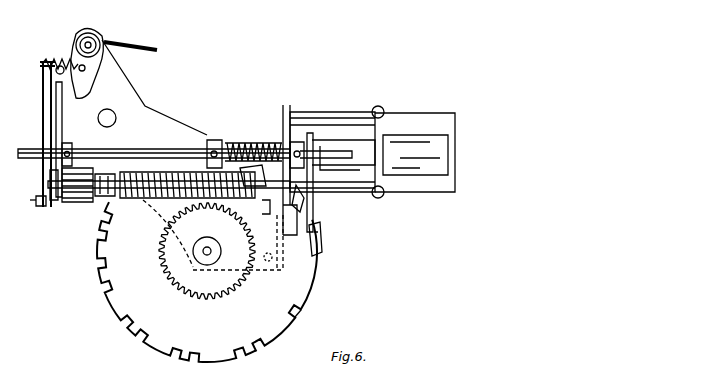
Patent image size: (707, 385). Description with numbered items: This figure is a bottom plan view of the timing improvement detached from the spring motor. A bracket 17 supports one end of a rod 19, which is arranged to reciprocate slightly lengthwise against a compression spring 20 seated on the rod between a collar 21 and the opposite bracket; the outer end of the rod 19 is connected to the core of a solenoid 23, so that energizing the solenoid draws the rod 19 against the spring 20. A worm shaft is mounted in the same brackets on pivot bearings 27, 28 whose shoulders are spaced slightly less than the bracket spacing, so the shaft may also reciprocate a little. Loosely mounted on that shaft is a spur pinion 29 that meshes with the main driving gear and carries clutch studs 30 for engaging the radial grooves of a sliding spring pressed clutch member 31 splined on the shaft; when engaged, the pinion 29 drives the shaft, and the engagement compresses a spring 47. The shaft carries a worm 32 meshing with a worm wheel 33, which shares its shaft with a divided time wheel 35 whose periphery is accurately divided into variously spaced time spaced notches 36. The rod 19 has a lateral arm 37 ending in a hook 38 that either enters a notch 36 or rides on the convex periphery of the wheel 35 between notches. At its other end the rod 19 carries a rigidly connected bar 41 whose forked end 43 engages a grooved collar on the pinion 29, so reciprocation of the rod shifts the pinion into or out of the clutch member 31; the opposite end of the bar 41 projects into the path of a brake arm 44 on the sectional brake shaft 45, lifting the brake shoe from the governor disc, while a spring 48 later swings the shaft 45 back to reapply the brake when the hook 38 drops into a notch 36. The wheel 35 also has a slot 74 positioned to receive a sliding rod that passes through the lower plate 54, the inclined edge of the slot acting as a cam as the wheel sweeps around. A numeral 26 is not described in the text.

The bracket 17 is at (43, 106).
The rod 19 is at (138, 150).
The compression spring 20 is at (256, 140).
The collar 21 is at (214, 138).
The solenoid 23 is at (18, 209).
The stop 26 is at (272, 212).
The pivot bearing 27 is at (40, 206).
The pivot bearing 28 is at (284, 216).
The spur pinion 29 is at (76, 206).
The clutch studs 30 is at (100, 204).
The sliding spring pressed clutch member 31 is at (128, 204).
The worm 32 is at (200, 202).
The worm wheel 33 is at (213, 249).
The time wheel 35 is at (207, 282).
The time spaced notches 36 is at (304, 316).
The lateral arm 37 is at (314, 206).
The hook 38 is at (322, 250).
The bar 41 is at (62, 116).
The forked end 43 is at (54, 206).
The brake arm 44 is at (89, 86).
The sectional brake shaft 45 is at (99, 36).
The spring 47 is at (146, 44).
The spring 48 is at (58, 60).
The lower plate 54 is at (148, 108).
The slot 74 is at (253, 175).